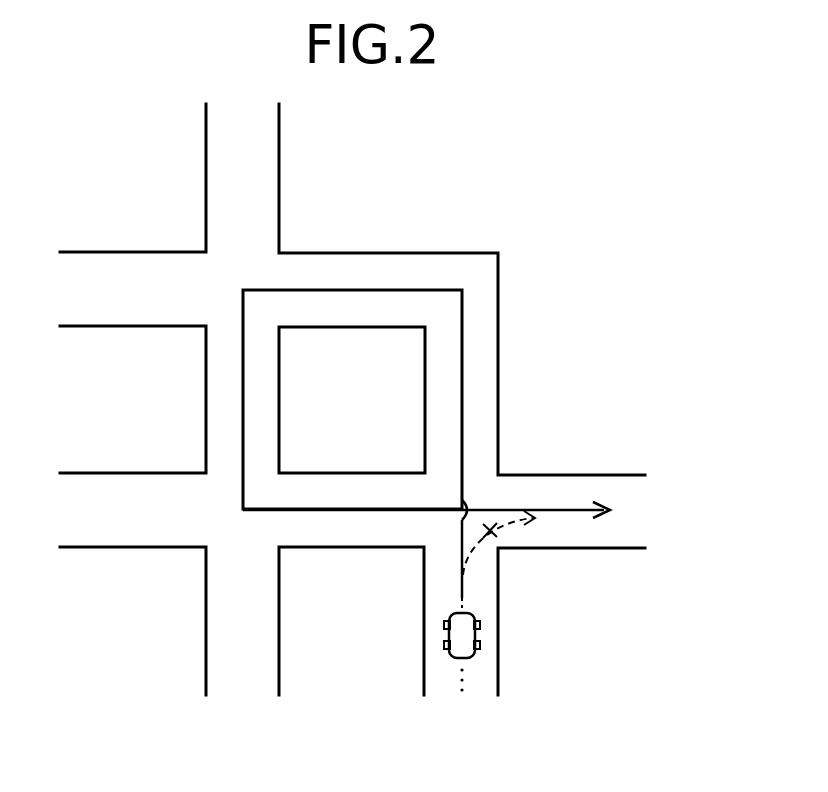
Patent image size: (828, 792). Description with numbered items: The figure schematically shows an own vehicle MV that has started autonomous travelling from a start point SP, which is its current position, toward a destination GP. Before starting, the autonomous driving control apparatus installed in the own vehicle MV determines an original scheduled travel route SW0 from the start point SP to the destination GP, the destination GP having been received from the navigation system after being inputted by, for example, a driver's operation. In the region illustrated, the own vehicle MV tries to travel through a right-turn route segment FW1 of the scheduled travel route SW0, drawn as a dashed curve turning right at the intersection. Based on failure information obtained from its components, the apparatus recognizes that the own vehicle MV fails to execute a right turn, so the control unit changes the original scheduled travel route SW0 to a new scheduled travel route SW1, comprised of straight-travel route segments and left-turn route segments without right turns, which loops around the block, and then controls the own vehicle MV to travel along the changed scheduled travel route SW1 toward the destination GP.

The new scheduled travel route SW1 is at (462, 392).
The destination GP is at (461, 511).
The right-turn route segment FW1 is at (547, 550).
The scheduled travel route SW0 is at (497, 560).
The own vehicle MV is at (468, 658).
The start point SP is at (459, 695).